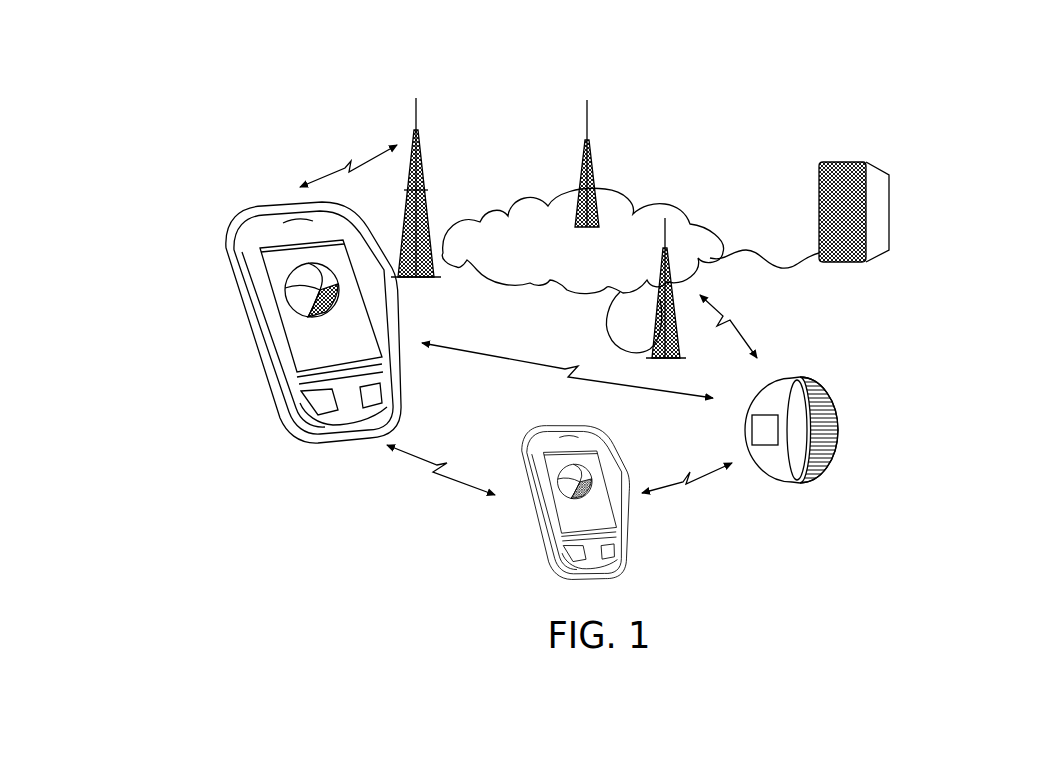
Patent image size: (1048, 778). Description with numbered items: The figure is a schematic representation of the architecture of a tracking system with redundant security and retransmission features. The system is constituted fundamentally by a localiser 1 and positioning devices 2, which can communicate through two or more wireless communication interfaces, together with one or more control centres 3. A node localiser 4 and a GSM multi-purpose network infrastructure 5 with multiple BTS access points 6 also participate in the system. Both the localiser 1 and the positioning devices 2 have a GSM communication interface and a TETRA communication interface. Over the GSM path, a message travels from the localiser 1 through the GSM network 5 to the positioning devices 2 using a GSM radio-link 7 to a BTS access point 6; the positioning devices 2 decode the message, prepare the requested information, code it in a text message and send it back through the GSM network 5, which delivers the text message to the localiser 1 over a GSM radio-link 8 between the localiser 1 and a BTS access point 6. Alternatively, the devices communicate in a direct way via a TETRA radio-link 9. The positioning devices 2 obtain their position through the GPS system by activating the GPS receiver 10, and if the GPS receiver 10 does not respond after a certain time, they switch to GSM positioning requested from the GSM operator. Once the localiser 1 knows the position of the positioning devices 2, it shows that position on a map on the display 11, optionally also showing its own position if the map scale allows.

The localiser 1 is at (225, 385).
The positioning devices 2 is at (837, 445).
The control centre 3 is at (878, 212).
The node localiser 4 is at (613, 550).
The GSM multi-purpose network infrastructure 5 is at (645, 212).
The BTS access points 6 is at (657, 293).
The GSM radio-link 7 is at (723, 313).
The GSM radio-link 8 is at (325, 170).
The TETRA radio-link 9 is at (423, 463).
The GPS receiver 10 is at (248, 215).
The display 11 is at (300, 363).